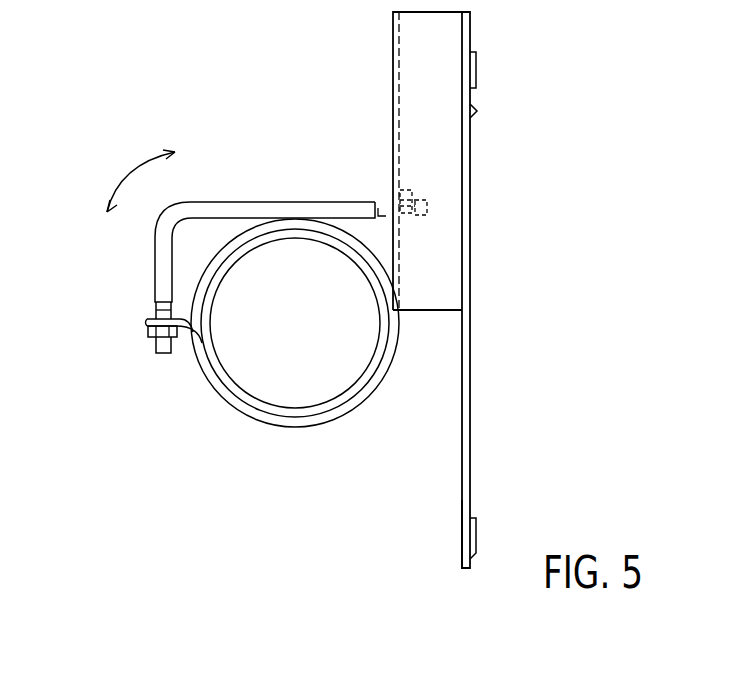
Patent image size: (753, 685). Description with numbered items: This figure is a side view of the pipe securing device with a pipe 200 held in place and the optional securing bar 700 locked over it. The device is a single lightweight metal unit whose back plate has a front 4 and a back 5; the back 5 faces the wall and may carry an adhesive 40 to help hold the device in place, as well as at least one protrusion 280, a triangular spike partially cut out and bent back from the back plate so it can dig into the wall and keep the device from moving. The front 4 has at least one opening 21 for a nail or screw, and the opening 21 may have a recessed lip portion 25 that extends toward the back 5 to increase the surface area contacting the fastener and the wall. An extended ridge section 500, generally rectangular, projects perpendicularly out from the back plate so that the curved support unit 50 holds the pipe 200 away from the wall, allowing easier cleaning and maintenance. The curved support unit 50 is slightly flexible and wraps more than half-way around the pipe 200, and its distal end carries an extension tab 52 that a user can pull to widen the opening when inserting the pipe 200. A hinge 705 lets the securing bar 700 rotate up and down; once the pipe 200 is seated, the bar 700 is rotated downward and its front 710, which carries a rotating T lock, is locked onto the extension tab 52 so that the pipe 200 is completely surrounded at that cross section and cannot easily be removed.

The front 4 is at (462, 474).
The back 5 is at (470, 238).
The opening 21 is at (462, 538).
The recessed lip portion 25 is at (478, 538).
The adhesive 40 is at (477, 70).
The curved support unit 50 is at (291, 428).
The extension tab 52 is at (152, 318).
The pipe 200 is at (317, 317).
The protrusion 280 is at (476, 113).
The extended ridge section 500 is at (435, 296).
The locking bar 700 is at (242, 202).
The hinge 705 is at (398, 190).
The front of the locking bar 710 is at (148, 332).